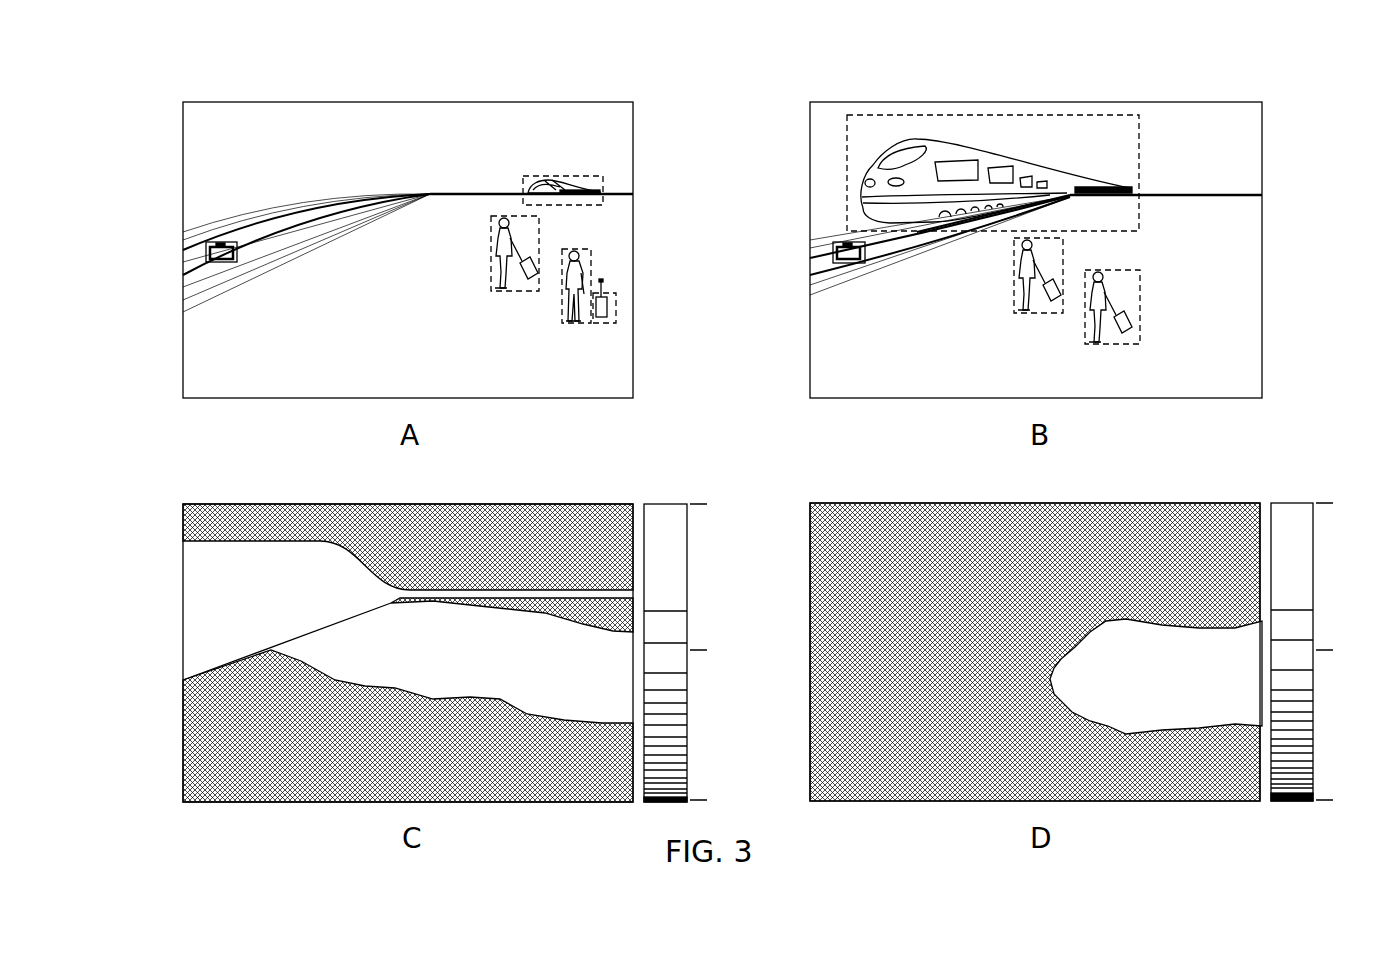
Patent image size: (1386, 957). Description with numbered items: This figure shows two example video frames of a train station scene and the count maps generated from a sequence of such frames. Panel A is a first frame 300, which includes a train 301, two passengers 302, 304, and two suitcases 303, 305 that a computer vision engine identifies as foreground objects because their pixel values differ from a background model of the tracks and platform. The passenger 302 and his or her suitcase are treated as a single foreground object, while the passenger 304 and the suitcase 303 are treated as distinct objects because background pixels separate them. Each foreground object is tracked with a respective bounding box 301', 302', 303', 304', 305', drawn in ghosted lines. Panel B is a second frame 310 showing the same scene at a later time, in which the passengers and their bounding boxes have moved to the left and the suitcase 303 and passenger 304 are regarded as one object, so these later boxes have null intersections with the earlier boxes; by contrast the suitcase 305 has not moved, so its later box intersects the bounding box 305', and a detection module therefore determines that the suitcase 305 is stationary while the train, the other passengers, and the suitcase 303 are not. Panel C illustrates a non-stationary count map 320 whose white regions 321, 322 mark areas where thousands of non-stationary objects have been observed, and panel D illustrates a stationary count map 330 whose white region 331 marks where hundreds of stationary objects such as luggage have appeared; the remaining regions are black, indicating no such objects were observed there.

The stationary count map 300 is at (495, 102).
The second video frame 310 is at (1155, 102).
The train 301 is at (801, 141).
The bounding box 301' is at (576, 175).
The passenger 302 is at (749, 263).
The bounding box 302' is at (484, 253).
The suitcase 303 is at (587, 326).
The bounding box 303' is at (634, 292).
The passenger 304 is at (827, 289).
The bounding box 304' is at (553, 303).
The suitcase 305 is at (535, 279).
The bounding box 305' is at (227, 277).
The non-stationary count map 320 is at (432, 630).
The white region 321 is at (549, 658).
The white region 322 is at (203, 658).
The confidence map 330 is at (1092, 628).
The white region 331 is at (1180, 665).